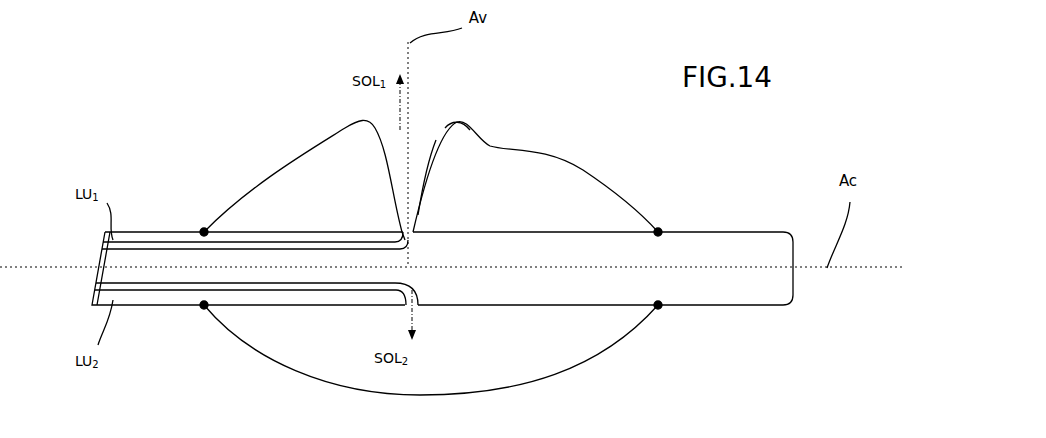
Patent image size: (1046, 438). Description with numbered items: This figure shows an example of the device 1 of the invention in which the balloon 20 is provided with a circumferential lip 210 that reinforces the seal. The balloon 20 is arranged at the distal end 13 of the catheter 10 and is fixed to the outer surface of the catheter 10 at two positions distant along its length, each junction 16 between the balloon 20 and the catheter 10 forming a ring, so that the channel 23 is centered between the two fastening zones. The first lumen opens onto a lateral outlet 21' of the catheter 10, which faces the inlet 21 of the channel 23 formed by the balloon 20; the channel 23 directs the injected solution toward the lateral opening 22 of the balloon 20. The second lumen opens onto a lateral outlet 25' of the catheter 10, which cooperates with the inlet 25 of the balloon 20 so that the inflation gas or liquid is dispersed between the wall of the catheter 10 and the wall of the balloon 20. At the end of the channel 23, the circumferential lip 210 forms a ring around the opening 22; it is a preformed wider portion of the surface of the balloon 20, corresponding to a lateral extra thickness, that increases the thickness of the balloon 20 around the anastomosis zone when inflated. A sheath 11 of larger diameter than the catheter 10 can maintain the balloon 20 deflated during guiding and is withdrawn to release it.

The device 1 is at (168, 125).
The catheter 10 is at (739, 318).
The sheath 11 is at (270, 230).
The distal end 13 is at (784, 319).
The junction 16 is at (204, 232).
The balloon 20 is at (332, 155).
The inlet 21 is at (287, 215).
The outlet 21' is at (293, 243).
The lateral opening 22 is at (425, 133).
The channel 23 is at (414, 177).
The inlet 25 is at (276, 327).
The outlet 25' is at (294, 293).
The circumferential lip 210 is at (460, 132).